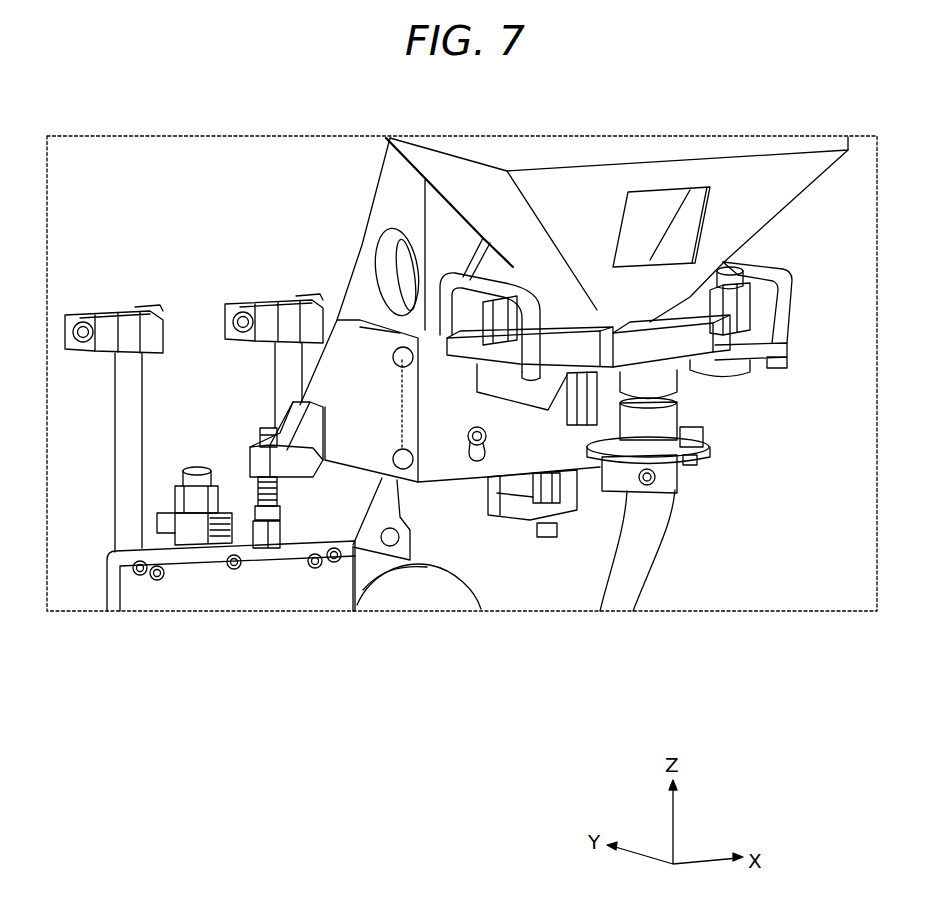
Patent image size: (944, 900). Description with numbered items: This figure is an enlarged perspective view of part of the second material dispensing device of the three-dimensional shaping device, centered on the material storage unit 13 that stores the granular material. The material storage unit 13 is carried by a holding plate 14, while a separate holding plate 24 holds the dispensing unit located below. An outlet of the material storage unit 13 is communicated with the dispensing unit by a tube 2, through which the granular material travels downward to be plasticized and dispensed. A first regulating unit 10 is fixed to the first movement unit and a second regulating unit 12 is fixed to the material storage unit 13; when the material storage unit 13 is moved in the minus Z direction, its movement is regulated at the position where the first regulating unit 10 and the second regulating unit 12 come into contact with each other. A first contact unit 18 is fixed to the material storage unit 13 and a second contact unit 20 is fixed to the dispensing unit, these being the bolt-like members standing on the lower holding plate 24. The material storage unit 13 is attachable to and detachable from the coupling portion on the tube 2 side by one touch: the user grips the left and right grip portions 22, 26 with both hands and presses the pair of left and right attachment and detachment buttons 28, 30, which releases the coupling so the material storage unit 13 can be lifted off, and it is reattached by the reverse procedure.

The tube 2 is at (655, 537).
The first regulating unit 10 is at (577, 478).
The second regulating unit 12 is at (603, 540).
The material storage unit 13 is at (582, 190).
The holding plate 14 is at (440, 457).
The first contact unit 18 is at (248, 545).
The second contact unit 20 is at (270, 545).
The grip portion 22 is at (450, 263).
The holding plate 24 is at (148, 597).
The grip portion 26 is at (745, 257).
The attachment and detachment button 28 is at (513, 260).
The attachment and detachment button 30 is at (723, 263).